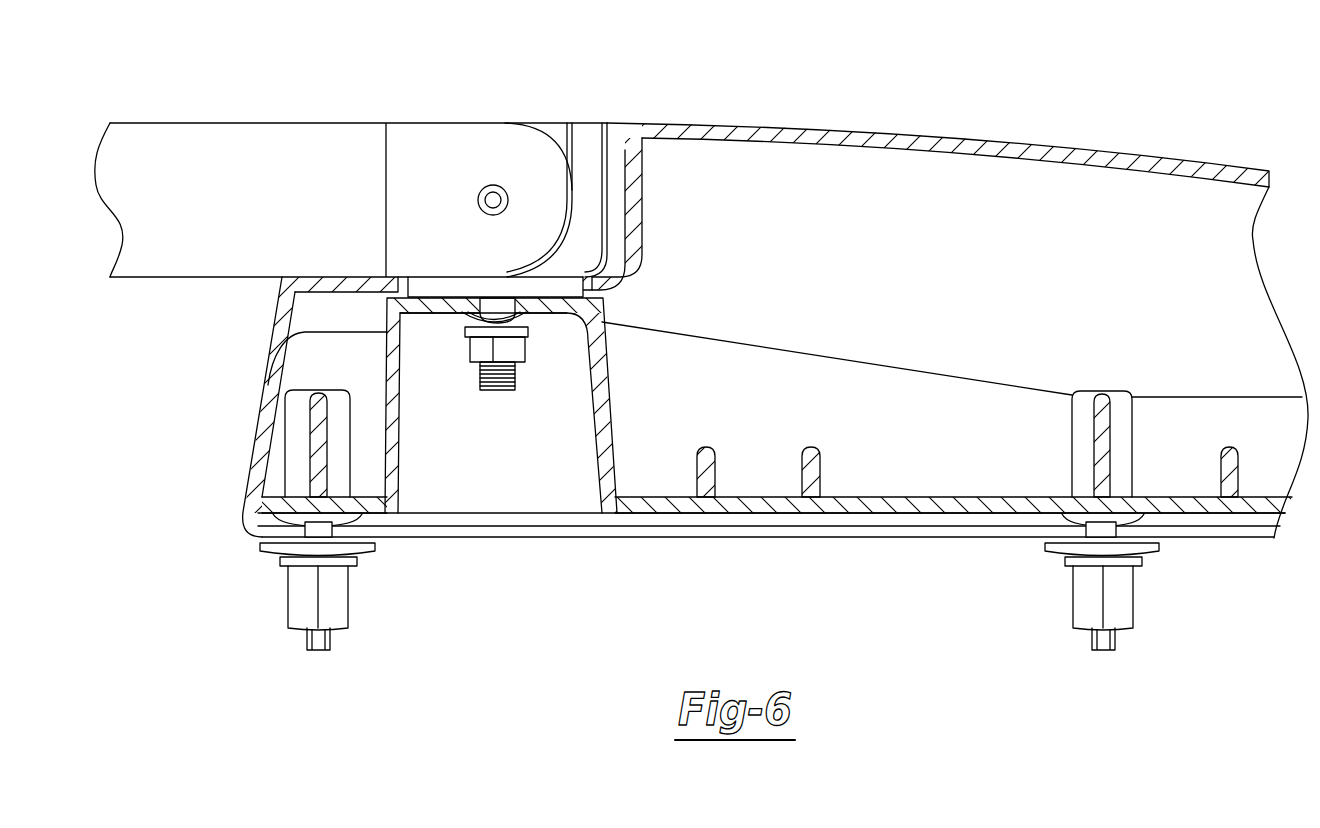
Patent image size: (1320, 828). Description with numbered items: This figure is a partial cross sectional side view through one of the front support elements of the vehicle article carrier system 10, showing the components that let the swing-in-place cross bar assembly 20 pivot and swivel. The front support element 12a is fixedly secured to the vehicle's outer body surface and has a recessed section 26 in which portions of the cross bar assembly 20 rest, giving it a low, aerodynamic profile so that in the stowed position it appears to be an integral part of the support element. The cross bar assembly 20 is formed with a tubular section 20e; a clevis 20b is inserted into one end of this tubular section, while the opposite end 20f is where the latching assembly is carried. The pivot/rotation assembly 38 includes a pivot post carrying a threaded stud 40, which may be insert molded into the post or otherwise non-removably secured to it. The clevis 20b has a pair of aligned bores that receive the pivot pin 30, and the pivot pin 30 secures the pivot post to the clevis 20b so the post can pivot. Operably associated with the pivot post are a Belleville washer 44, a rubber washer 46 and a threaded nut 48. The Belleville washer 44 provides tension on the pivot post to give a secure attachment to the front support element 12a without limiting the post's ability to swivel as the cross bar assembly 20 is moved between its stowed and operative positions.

The vehicle article carrier system 10 is at (775, 269).
The front support element 12a is at (922, 185).
The cross bar assembly 20 is at (351, 195).
The clevis 20b is at (420, 140).
The tubular section 20e is at (158, 238).
The end of the cross bar assembly 20f is at (345, 152).
The recessed section 26 is at (625, 152).
The pivot pin 30 is at (493, 185).
The pivot/rotation assembly 38 is at (477, 404).
The threaded stud 40 is at (497, 392).
The Belleville washer 44 is at (465, 320).
The rubber washer 46 is at (465, 332).
The threaded nut 48 is at (470, 352).